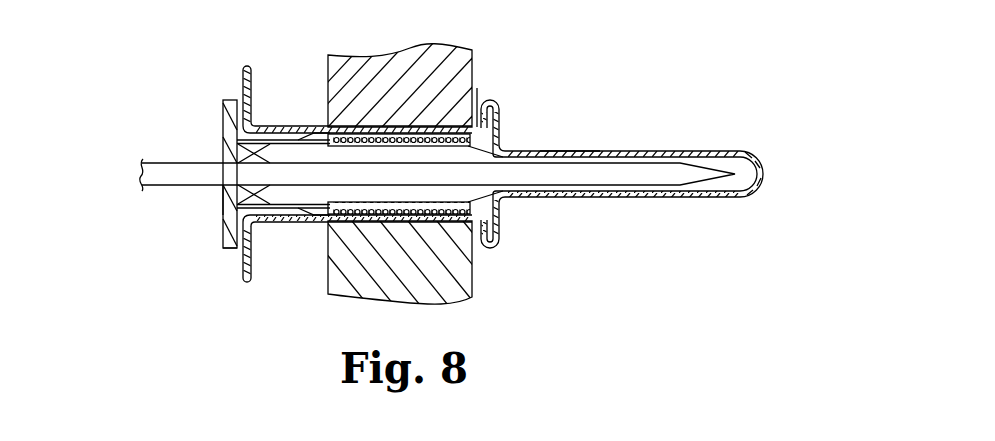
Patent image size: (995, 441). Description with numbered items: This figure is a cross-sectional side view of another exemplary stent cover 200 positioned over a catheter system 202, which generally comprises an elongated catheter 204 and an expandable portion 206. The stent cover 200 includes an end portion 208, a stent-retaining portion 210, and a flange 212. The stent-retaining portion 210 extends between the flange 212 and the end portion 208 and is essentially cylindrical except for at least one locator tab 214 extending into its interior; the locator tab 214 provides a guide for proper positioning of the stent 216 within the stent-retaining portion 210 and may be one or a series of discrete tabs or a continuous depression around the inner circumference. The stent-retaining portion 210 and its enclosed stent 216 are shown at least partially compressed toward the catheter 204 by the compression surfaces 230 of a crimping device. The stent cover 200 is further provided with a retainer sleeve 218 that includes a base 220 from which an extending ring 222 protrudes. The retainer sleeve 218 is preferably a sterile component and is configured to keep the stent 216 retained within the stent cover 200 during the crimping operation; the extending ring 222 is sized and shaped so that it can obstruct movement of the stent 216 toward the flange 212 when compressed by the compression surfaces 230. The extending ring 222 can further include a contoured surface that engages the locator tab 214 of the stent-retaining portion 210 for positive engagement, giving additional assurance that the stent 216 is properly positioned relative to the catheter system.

The stent cover 200 is at (583, 122).
The catheter system 202 is at (148, 132).
The elongated catheter 204 is at (172, 185).
The expandable portion 206 is at (268, 162).
The end portion 208 is at (665, 151).
The stent-retaining portion 210 is at (486, 100).
The flange 212 is at (247, 66).
The locator tab 214 is at (300, 134).
The stent 216 is at (312, 218).
The retainer sleeve 218 is at (214, 255).
The base 220 is at (224, 203).
The extending ring 222 is at (240, 256).
The compression surfaces 230 is at (465, 60).